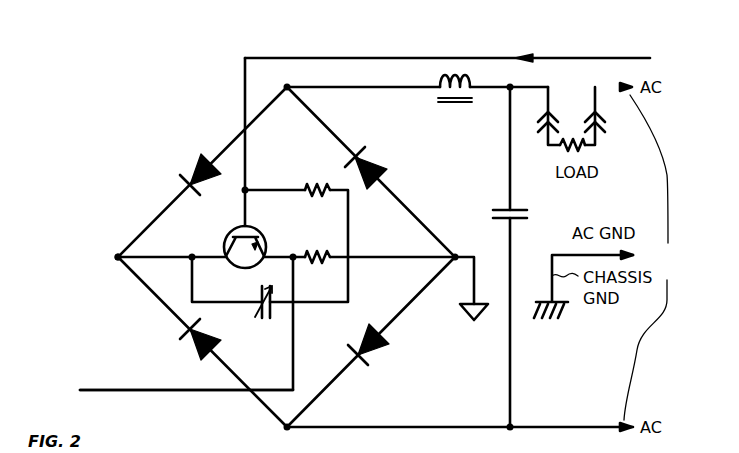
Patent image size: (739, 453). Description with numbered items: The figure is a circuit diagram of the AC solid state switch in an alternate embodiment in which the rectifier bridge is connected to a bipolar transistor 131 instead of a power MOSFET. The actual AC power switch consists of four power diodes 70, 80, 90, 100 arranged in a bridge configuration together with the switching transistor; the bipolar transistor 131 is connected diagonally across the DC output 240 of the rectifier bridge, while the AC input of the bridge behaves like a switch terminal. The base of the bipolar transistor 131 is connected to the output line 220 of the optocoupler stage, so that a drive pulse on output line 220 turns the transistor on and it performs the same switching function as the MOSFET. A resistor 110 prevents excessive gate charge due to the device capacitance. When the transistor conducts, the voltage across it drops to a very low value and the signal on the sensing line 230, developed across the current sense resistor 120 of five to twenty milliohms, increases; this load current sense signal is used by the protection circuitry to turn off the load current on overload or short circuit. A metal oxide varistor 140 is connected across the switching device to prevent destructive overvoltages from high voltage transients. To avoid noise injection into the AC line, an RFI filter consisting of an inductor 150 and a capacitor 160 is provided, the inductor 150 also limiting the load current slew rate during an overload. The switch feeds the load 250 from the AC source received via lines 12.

The AC source lines 12 is at (650, 257).
The power diode 70 is at (383, 164).
The power diode 80 is at (198, 168).
The power diode 90 is at (185, 355).
The power diode 100 is at (388, 348).
The resistor 110 is at (313, 183).
The current sense resistor 120 is at (321, 249).
The bipolar transistor 131 is at (226, 240).
The metal oxide varistor 140 is at (275, 321).
The inductor 150 is at (452, 105).
The capacitor 160 is at (506, 205).
The output line 220 is at (590, 58).
The sensing line 230 is at (120, 390).
The DC output 240 is at (118, 252).
The load 250 is at (588, 150).